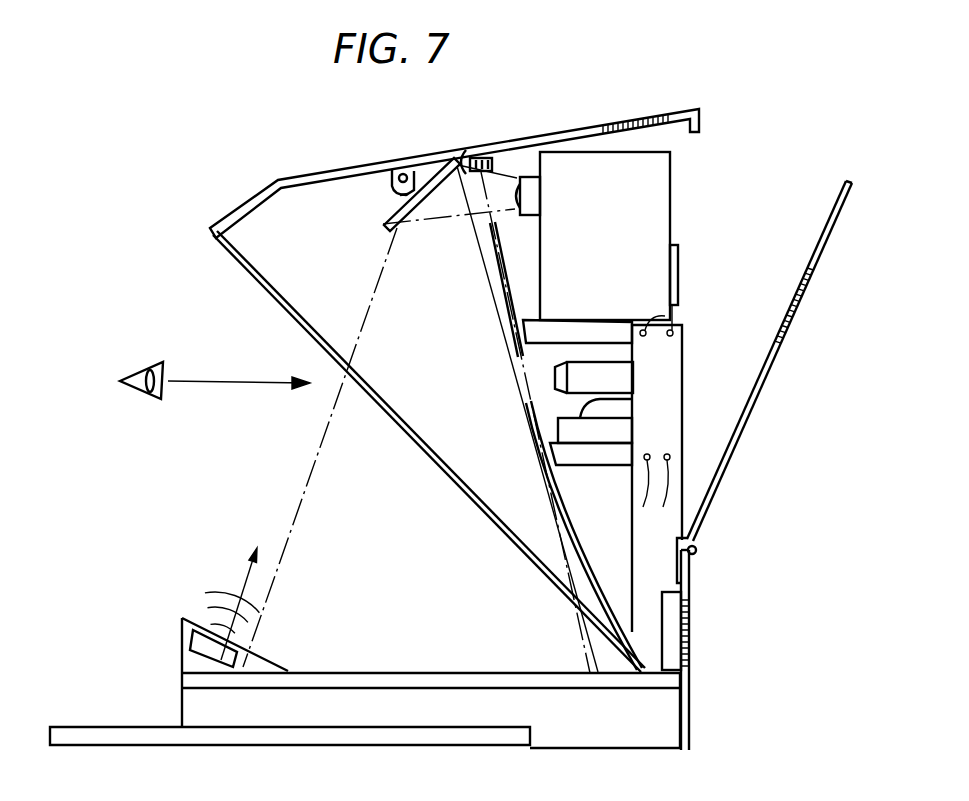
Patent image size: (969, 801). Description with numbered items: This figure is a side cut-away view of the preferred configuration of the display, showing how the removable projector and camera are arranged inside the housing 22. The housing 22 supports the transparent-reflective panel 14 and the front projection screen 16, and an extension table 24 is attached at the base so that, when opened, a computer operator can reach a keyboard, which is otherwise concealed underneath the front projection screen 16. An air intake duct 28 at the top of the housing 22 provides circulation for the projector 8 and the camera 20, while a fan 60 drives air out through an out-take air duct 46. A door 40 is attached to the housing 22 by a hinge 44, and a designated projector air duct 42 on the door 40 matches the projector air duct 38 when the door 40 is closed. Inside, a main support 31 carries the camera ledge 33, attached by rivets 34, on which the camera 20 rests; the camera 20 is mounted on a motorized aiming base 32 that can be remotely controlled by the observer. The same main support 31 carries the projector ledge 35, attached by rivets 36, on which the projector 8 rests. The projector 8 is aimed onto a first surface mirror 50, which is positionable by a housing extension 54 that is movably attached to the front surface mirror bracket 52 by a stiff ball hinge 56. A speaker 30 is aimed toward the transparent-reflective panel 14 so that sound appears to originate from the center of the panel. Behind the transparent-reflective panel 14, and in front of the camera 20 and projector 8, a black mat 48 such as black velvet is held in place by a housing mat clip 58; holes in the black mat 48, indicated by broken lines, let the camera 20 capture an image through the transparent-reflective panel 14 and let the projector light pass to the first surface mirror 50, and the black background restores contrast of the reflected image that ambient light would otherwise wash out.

The projector 8 is at (673, 193).
The transparent-reflective panel 14 is at (288, 307).
The front projection screen 16 is at (413, 670).
The camera 20 is at (613, 360).
The housing 22 is at (560, 131).
The extension table 24 is at (107, 722).
The air intake duct 28 is at (634, 123).
The speaker 30 is at (195, 620).
The main support 31 is at (682, 458).
The motorized aiming base 32 is at (613, 423).
The camera ledge 33 is at (583, 457).
The rivets 34 is at (657, 496).
The projector ledge 35 is at (537, 332).
The rivets 36 is at (676, 322).
The projector air duct 38 is at (680, 268).
The door 40 is at (820, 238).
The designated projector air duct 42 is at (798, 310).
The hinge 44 is at (697, 550).
The out-take air duct 46 is at (693, 615).
The black mat 48 is at (498, 295).
The first surface mirror 50 is at (393, 217).
The front surface mirror bracket 52 is at (403, 191).
The housing extension 54 is at (387, 173).
The stiff ball hinge 56 is at (409, 175).
The housing mat clip 58 is at (493, 145).
The fan 60 is at (667, 652).